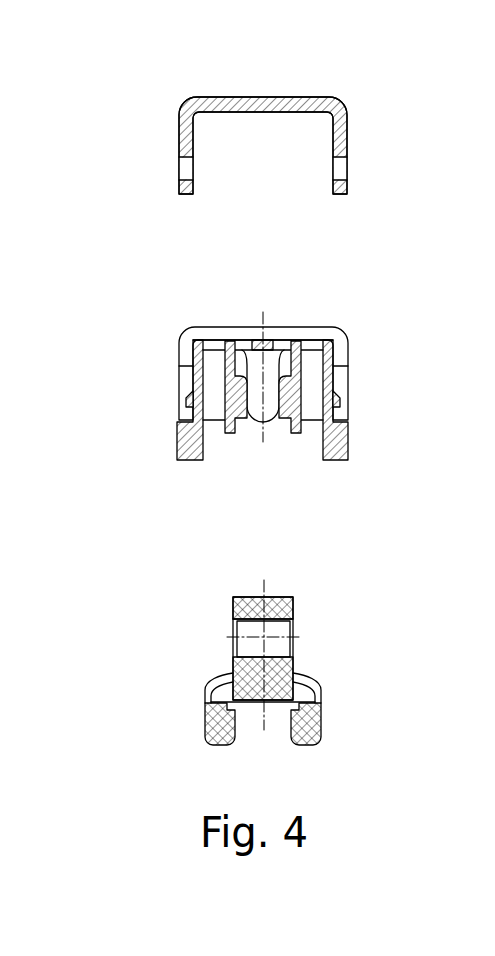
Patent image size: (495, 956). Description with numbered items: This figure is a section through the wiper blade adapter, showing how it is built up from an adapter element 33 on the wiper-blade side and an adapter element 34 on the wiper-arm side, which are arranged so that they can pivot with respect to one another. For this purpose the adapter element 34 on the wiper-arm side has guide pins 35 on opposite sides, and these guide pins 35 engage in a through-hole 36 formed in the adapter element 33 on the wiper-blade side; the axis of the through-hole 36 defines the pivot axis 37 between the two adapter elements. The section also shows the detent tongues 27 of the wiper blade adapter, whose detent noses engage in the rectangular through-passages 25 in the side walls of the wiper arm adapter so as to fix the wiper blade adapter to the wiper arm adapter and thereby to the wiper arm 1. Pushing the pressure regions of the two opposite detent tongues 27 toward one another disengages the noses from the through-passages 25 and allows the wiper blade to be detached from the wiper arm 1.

The wiper arm 1 is at (338, 74).
The through-passage 25 is at (342, 165).
The detent tongue 27 is at (338, 448).
The adapter element on the wiper-blade side 33 is at (317, 730).
The adapter element on the wiper-arm side 34 is at (342, 380).
The guide pins 35 is at (245, 378).
The through-hole 36 is at (278, 653).
The pivot axis 37 is at (247, 636).